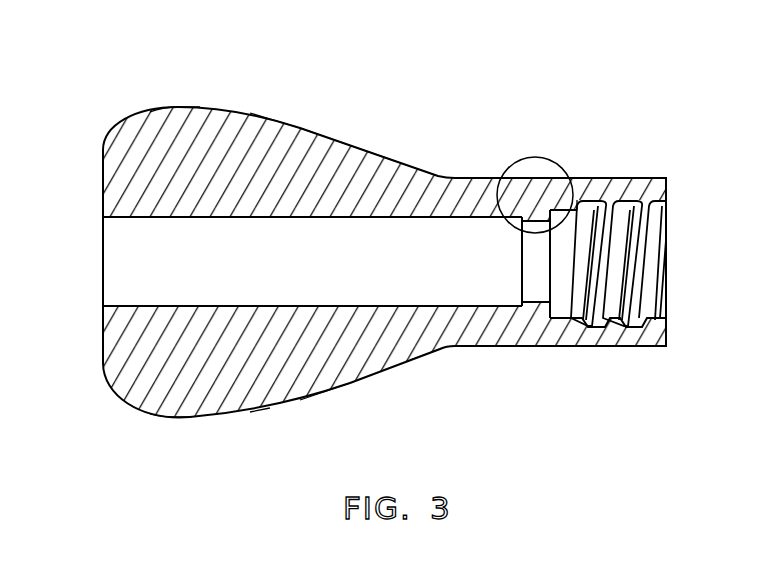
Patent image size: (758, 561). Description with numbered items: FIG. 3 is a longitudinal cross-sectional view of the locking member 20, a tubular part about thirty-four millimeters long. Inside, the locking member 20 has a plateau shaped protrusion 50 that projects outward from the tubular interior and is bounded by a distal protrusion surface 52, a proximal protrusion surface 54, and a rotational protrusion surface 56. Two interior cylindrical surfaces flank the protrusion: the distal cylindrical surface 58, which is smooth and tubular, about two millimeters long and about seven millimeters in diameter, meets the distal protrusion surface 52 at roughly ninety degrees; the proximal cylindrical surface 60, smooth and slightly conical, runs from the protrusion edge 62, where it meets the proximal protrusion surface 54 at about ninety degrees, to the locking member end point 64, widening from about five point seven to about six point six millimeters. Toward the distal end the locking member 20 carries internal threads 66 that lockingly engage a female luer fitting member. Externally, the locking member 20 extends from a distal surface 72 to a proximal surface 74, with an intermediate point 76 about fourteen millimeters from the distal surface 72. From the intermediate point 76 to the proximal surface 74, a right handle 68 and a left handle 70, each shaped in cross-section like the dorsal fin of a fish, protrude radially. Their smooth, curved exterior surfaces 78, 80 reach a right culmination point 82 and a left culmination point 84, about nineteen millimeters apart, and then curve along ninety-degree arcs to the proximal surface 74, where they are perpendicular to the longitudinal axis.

The locking member 20 is at (513, 58).
The plateau shaped protrusion 50 is at (546, 159).
The distal protrusion surface 52 is at (540, 205).
The proximal protrusion surface 54 is at (520, 222).
The rotational protrusion surface 56 is at (530, 226).
The distal cylindrical surface 58 is at (552, 302).
The proximal cylindrical surface 60 is at (300, 306).
The protrusion edge 62 is at (527, 320).
The locking member end point 64 is at (104, 302).
The internal threads 66 is at (615, 330).
The right handle 68 is at (255, 363).
The left handle 70 is at (290, 155).
The distal surface 72 is at (662, 348).
The proximal surface 74 is at (103, 338).
The intermediate point 76 is at (448, 347).
The longitudinal cross-sectional exterior surface of the right handle 78 is at (330, 389).
The longitudinal cross-sectional exterior surface of the left handle 80 is at (358, 148).
The right culmination point 82 is at (188, 417).
The left culmination point 84 is at (187, 107).